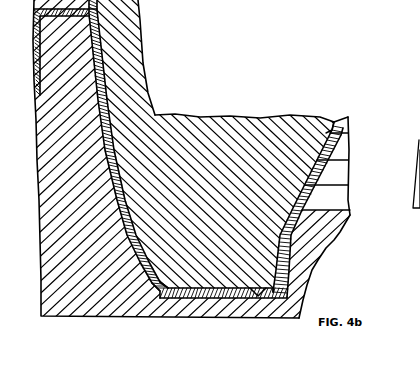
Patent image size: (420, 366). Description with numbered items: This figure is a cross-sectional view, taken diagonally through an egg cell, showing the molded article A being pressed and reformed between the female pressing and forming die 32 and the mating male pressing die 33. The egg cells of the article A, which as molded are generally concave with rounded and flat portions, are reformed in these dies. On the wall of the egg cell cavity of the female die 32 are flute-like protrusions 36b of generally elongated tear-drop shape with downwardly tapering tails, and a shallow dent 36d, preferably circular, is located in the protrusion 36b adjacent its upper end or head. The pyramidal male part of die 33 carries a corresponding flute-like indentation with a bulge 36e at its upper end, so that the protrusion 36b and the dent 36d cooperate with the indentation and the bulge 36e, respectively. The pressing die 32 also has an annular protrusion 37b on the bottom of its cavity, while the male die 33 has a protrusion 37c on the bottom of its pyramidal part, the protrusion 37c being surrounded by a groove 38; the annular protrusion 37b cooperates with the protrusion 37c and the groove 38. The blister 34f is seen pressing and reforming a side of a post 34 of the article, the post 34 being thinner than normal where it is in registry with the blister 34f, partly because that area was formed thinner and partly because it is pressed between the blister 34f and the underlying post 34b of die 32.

The female pressing and forming die 32 is at (305, 265).
The male pressing die 33 is at (237, 121).
The post 34 is at (97, 43).
The post of die 34b is at (100, 83).
The blister 34f is at (152, 116).
The flute-like protrusion 36b is at (296, 226).
The shallow dent 36d is at (318, 188).
The bulge 36e is at (331, 160).
The annular protrusion 37b is at (252, 300).
The protrusion 37c is at (202, 302).
The groove 38 is at (146, 300).
The article A is at (328, 125).